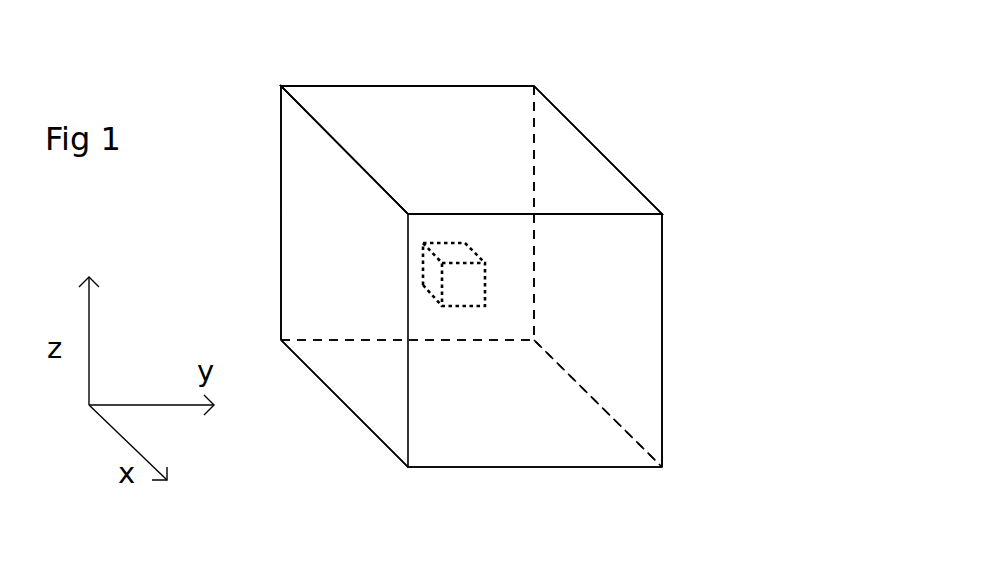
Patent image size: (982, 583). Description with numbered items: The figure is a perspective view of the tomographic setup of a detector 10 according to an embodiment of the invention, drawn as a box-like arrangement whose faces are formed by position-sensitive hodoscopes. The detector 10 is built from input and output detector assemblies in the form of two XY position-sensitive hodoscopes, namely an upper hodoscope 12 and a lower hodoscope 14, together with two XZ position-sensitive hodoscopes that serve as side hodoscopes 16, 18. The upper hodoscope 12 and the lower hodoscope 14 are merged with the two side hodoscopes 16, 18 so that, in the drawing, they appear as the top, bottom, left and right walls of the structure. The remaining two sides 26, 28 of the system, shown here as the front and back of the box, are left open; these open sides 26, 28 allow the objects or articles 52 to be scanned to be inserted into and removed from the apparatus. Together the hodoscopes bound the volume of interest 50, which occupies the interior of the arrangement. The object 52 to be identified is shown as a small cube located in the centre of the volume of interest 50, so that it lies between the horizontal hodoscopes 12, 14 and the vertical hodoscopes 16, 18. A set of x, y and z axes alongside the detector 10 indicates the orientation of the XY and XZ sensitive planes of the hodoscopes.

The detector 10 is at (657, 180).
The upper hodoscope 12 is at (521, 147).
The lower hodoscope 14 is at (453, 408).
The side hodoscope 16 is at (331, 210).
The side hodoscope 18 is at (600, 278).
The open side 26 is at (527, 375).
The open side 28 is at (319, 158).
The volume of interest 50 is at (441, 132).
The object to be scanned 52 is at (430, 282).